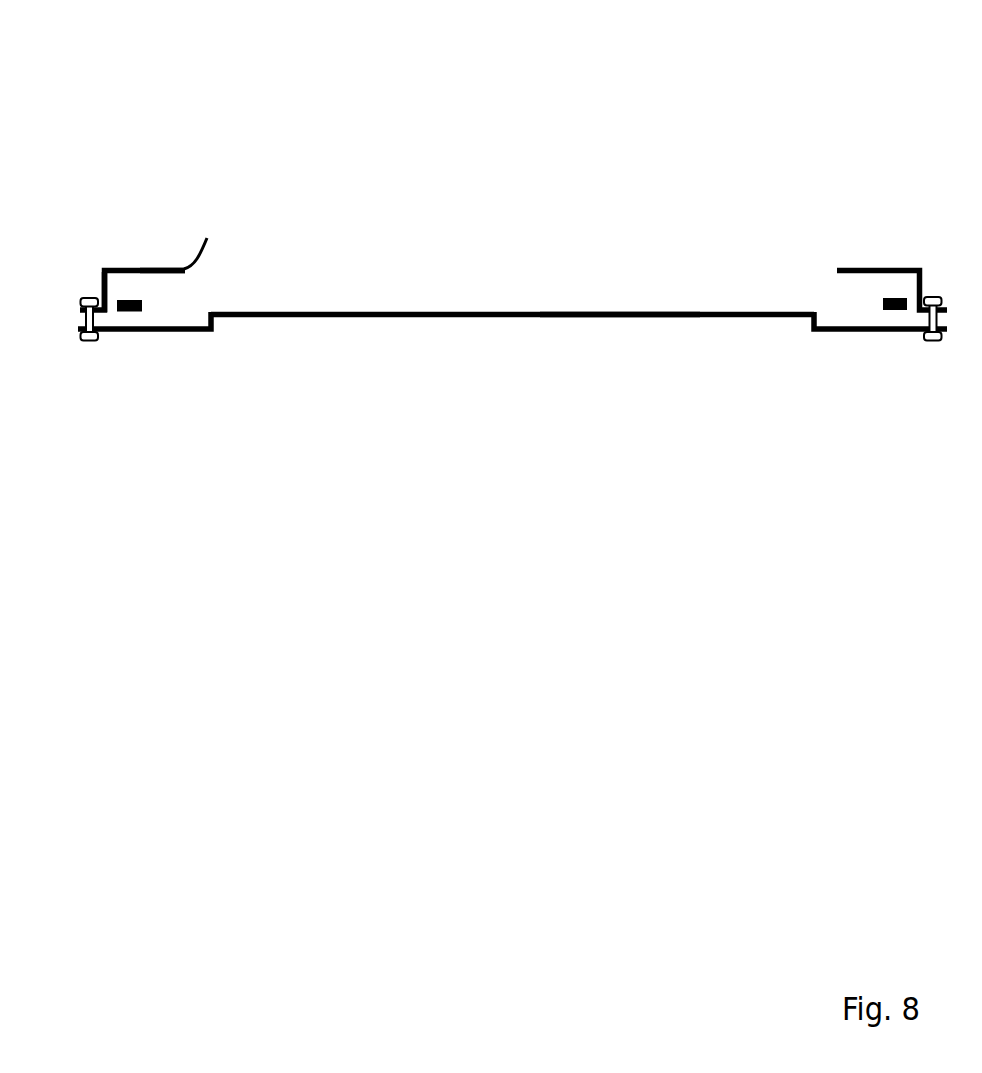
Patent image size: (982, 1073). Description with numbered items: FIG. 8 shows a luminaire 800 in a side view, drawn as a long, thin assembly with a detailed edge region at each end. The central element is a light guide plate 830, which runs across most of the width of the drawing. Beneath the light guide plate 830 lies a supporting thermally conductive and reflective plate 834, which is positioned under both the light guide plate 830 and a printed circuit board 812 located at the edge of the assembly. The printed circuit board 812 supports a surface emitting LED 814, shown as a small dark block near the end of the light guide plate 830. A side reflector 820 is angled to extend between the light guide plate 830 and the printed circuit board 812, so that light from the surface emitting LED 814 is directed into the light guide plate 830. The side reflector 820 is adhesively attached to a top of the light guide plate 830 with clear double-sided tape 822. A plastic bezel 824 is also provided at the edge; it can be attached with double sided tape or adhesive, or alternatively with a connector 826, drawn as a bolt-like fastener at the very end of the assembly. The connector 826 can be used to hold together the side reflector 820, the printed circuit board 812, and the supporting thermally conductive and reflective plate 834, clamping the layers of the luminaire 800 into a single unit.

The luminaire 800 is at (226, 96).
The printed circuit board 812 is at (199, 326).
The surface emitting LED 814 is at (124, 321).
The side reflector 820 is at (116, 277).
The clear double-sided tape 822 is at (188, 242).
The plastic bezel 824 is at (96, 280).
The connector 826 is at (74, 338).
The light guide plate 830 is at (483, 301).
The supporting thermally conductive and reflective plate 834 is at (605, 325).